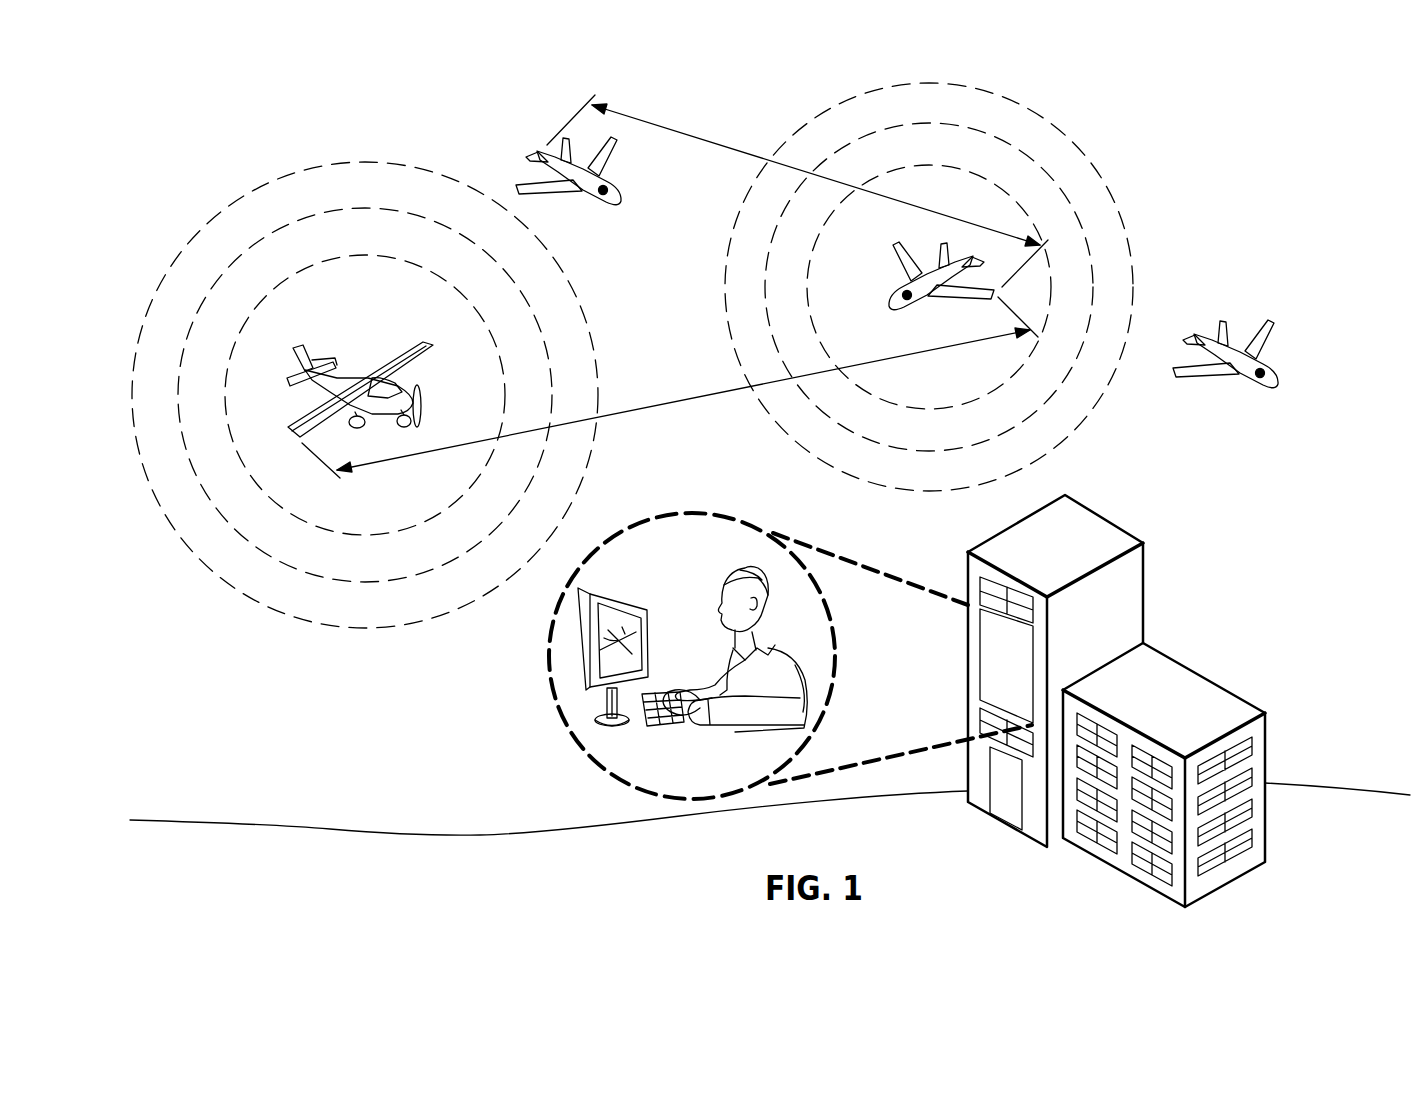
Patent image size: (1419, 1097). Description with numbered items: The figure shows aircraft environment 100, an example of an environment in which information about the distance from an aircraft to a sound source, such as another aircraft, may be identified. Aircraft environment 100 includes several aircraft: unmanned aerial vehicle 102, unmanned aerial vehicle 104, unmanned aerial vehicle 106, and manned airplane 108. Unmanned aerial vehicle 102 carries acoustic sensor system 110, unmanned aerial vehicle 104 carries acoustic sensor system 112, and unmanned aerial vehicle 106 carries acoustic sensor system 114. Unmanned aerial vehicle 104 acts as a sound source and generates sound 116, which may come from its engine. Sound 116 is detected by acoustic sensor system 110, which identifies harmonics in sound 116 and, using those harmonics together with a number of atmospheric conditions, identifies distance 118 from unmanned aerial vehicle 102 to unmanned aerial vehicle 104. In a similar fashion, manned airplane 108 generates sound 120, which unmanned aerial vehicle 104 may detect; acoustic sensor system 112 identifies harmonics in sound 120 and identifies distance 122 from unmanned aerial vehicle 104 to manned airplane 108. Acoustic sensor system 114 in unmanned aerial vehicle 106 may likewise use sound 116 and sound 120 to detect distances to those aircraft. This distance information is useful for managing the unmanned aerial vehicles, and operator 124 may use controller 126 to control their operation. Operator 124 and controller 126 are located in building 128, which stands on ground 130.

The aircraft environment 100 is at (1205, 161).
The unmanned aerial vehicle 102 is at (620, 186).
The unmanned aerial vehicle 104 is at (893, 297).
The unmanned aerial vehicle 106 is at (1275, 371).
The manned airplane 108 is at (390, 362).
The acoustic sensor system 110 is at (600, 196).
The acoustic sensor system 112 is at (910, 301).
The acoustic sensor system 114 is at (1252, 381).
The sound 116 is at (929, 492).
The distance 118 is at (740, 151).
The sound 120 is at (365, 161).
The distance 122 is at (685, 401).
The operator 124 is at (728, 650).
The controller 126 is at (625, 600).
The building 128 is at (1100, 517).
The ground 130 is at (505, 841).